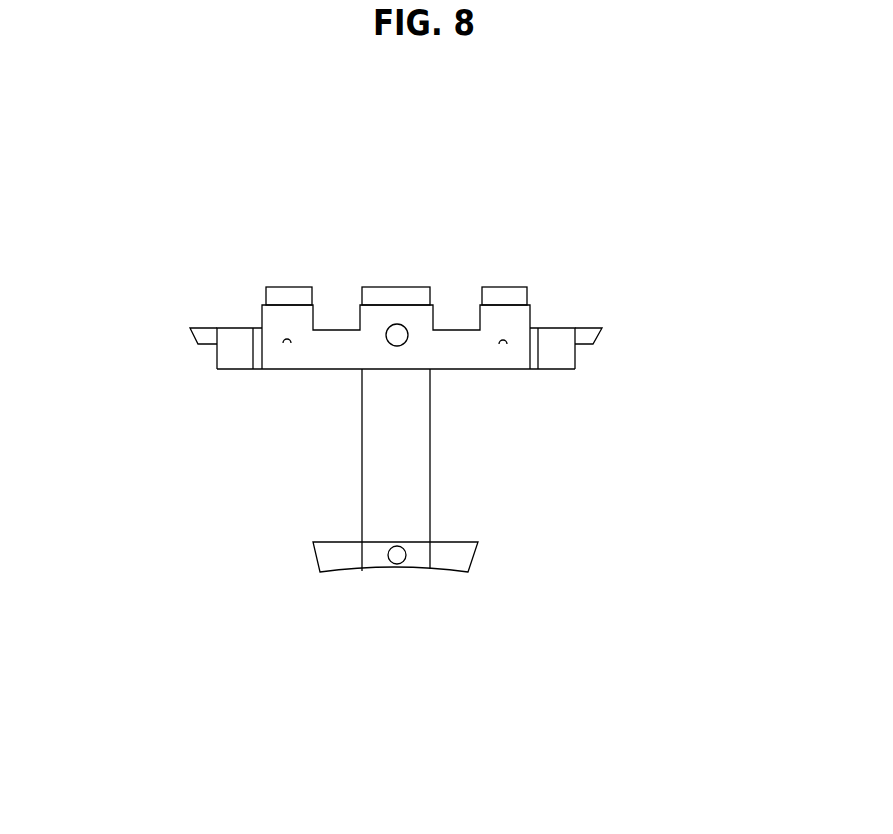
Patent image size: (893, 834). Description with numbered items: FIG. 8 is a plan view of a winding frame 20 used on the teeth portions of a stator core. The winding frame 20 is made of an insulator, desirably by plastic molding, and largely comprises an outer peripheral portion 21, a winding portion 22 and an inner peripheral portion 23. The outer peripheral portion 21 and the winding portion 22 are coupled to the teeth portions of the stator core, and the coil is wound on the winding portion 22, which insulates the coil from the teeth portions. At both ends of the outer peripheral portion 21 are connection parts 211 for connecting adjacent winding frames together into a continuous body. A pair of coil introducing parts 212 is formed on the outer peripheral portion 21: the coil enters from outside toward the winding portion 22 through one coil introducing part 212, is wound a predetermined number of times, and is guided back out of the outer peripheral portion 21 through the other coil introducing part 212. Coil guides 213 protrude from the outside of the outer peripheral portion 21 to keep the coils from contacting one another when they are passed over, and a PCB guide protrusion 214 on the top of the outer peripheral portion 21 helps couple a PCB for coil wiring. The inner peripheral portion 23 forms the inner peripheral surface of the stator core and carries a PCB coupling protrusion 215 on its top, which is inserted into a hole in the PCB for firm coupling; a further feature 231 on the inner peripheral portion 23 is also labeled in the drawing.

The winding frame 20 is at (205, 235).
The outer peripheral portion 21 is at (498, 322).
The connection part 211 is at (197, 338).
The coil introducing part 212 is at (258, 369).
The coil guide 213 is at (290, 287).
The PCB guide protrusion 214 is at (395, 338).
The PCB coupling protrusion 215 is at (397, 563).
The winding portion 22 is at (408, 471).
The inner peripheral portion 23 is at (448, 572).
The stop portion 231 is at (537, 367).